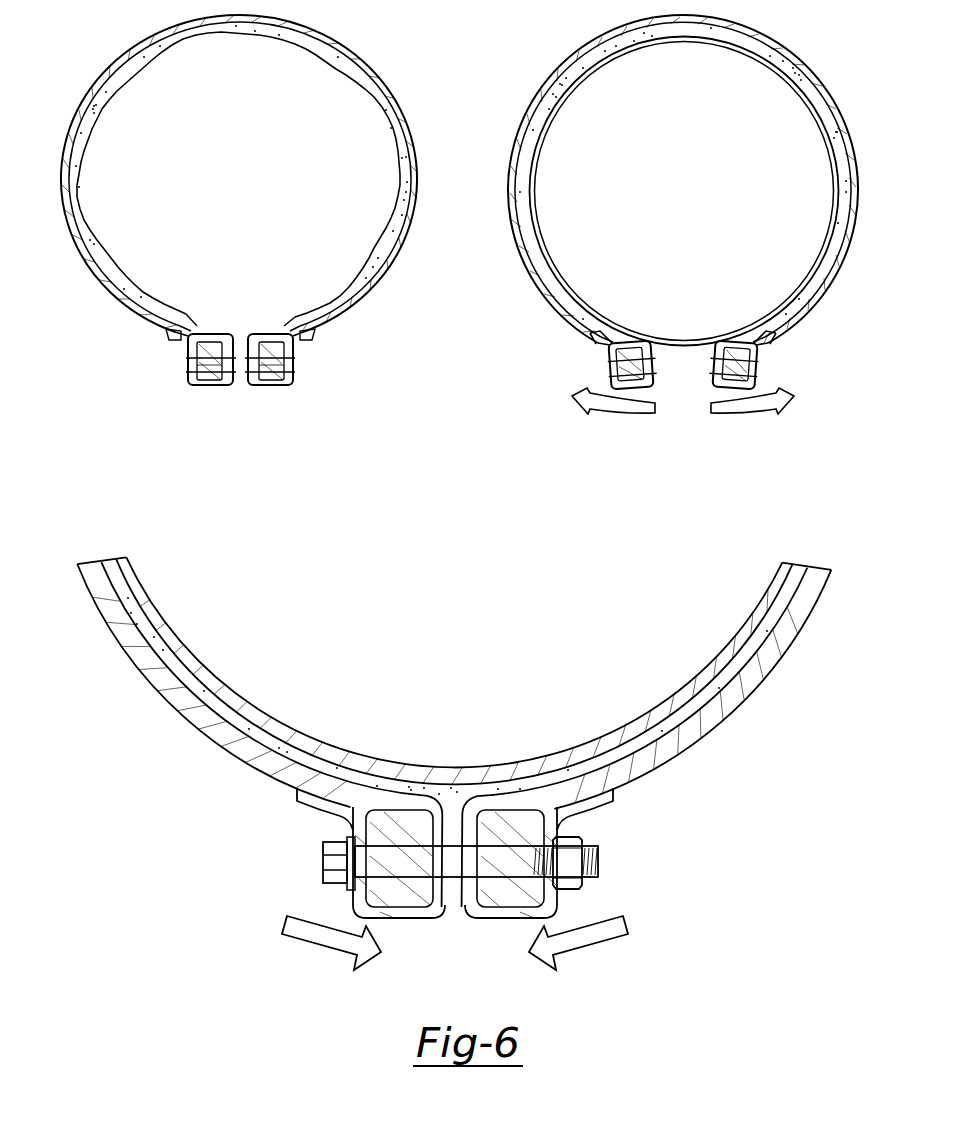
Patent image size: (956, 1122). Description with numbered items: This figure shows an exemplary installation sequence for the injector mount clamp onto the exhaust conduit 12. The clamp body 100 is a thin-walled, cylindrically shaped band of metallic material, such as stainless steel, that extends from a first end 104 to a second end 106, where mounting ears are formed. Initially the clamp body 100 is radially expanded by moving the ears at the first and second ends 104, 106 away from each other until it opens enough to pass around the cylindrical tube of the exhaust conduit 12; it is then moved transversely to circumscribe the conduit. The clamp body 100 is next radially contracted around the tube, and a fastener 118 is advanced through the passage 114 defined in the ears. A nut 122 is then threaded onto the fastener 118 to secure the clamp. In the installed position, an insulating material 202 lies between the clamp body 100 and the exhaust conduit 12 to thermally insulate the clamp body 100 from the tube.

The clamp body 100 is at (308, 24).
The insulating material 202 is at (93, 230).
The exhaust conduit 12 is at (678, 338).
The first end 104 is at (204, 386).
The second end 106 is at (276, 386).
The passage 114 is at (205, 353).
The fastener 118 is at (360, 862).
The nut 122 is at (572, 843).